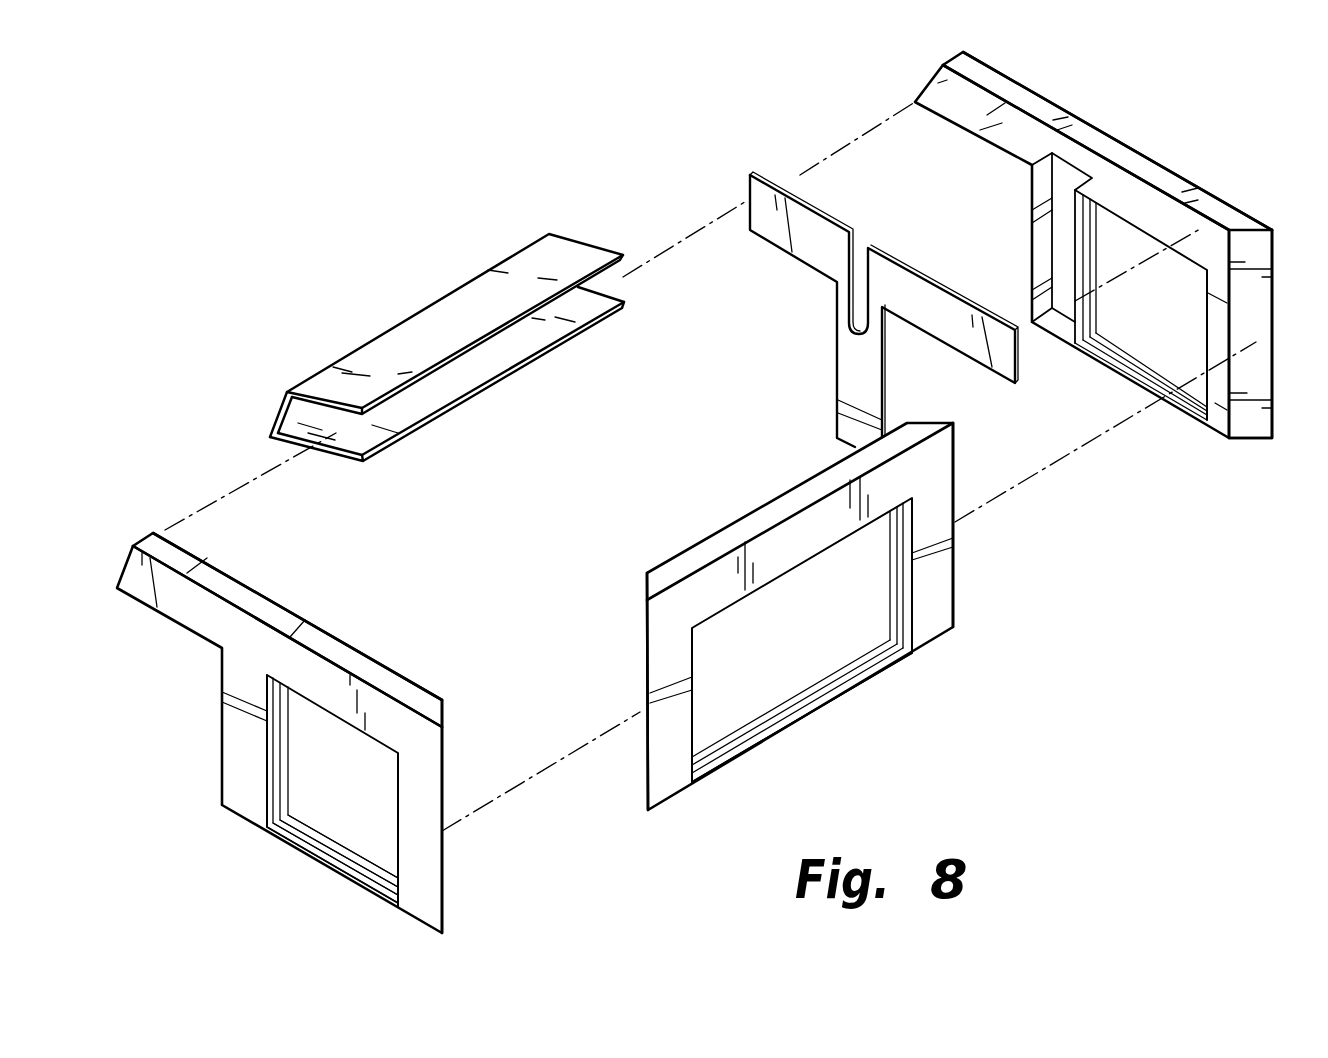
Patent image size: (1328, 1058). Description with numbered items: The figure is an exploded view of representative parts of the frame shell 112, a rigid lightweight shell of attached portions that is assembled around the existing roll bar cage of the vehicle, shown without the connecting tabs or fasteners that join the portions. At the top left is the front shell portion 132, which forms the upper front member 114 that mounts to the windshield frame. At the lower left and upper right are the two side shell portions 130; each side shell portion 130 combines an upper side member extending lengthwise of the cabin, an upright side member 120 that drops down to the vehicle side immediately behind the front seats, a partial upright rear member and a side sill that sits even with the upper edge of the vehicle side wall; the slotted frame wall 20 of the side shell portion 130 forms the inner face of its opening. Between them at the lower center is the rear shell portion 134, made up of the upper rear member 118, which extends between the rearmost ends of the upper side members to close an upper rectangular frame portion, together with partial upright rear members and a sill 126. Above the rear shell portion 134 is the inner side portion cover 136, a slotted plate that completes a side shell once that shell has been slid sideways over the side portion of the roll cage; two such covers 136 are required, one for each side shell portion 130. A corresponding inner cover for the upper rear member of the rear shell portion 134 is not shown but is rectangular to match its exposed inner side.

The inner wall groove 20 is at (1097, 306).
The frame shell 112 is at (701, 492).
The upper front member 114 is at (485, 390).
The upper rear member 118 is at (814, 604).
The upright side members 120 is at (326, 733).
The sill 126 is at (810, 687).
The side shell portion 130 is at (701, 492).
The front shell portion 132 is at (447, 332).
The rear shell portion 134 is at (814, 604).
The inner side portion cover 136 is at (912, 262).